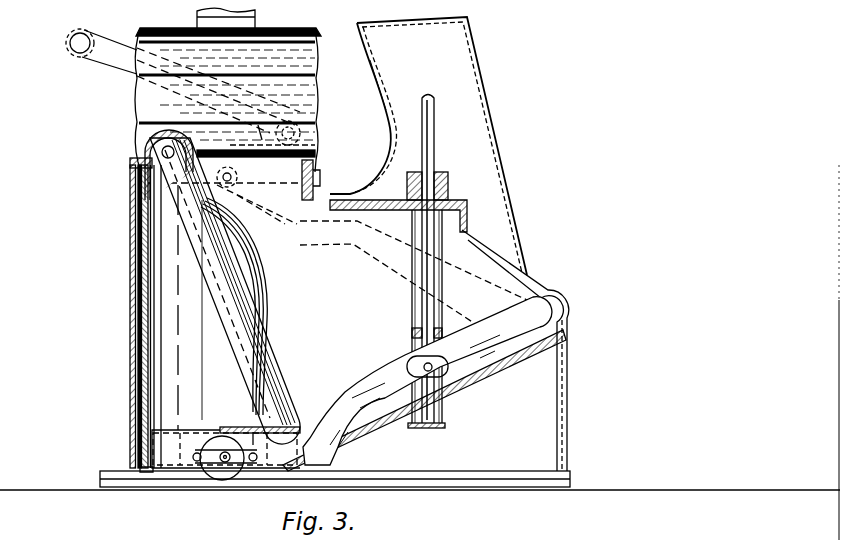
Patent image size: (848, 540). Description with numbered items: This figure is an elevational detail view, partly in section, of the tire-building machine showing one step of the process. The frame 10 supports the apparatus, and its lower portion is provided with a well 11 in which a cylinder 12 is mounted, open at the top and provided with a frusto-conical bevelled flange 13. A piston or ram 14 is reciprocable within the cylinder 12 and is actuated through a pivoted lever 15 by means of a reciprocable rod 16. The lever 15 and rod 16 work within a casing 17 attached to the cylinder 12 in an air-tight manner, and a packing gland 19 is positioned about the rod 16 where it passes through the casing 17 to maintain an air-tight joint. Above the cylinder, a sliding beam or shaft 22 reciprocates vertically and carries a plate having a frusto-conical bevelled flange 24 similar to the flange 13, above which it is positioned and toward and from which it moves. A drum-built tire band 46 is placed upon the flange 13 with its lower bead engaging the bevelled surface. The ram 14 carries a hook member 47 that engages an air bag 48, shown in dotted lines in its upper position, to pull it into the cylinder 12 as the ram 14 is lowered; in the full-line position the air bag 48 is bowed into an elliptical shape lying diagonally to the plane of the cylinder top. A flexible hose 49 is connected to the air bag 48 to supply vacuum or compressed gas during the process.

The frame 10 is at (483, 72).
The well 11 is at (130, 293).
The cylinder 12 is at (148, 323).
The frusto-conical bevelled flange 13 is at (138, 165).
The piston or ram 14 is at (167, 430).
The pivoted lever 15 is at (372, 377).
The reciprocable rod 16 is at (437, 147).
The casing 17 is at (474, 373).
The packing gland 19 is at (453, 198).
The sliding beam or shaft 22 is at (256, 16).
The frusto-conical bevelled flange 24 is at (137, 33).
The drum-built tire band 46 is at (133, 118).
The hook member 47 is at (313, 100).
The air bag 48 is at (224, 308).
The flexible hose 49 is at (262, 270).